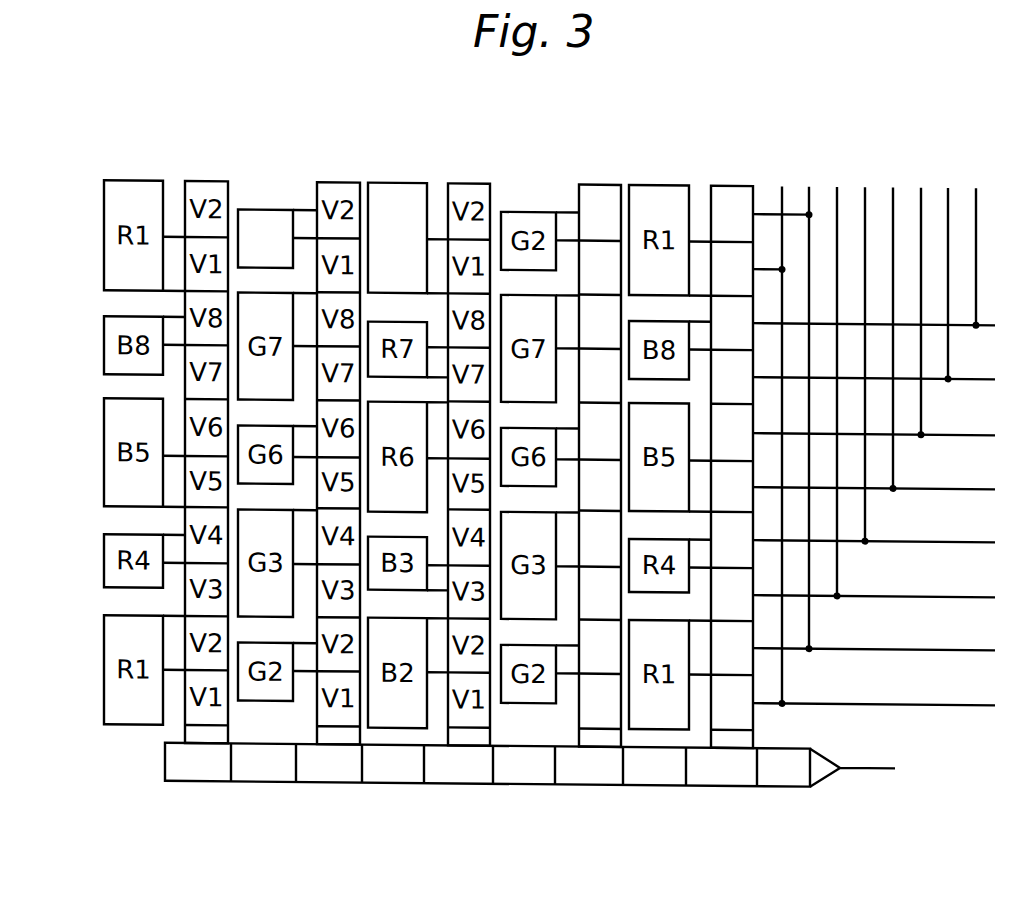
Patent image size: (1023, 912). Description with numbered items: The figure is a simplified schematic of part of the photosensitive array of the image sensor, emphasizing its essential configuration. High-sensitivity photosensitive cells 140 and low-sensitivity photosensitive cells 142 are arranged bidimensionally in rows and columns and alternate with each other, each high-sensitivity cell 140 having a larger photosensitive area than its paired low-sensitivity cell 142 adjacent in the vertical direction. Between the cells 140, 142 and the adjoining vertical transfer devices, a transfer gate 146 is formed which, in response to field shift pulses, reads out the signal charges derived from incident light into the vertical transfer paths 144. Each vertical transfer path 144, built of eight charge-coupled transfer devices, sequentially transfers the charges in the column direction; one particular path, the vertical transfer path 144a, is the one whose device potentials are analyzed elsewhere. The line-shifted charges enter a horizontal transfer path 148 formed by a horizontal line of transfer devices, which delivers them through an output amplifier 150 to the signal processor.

The high-sensitivity photosensitive cell 140 is at (408, 198).
The low-sensitivity photosensitive cell 142 is at (277, 192).
The vertical transfer path 144 is at (618, 426).
The vertical transfer path 144a is at (754, 426).
The transfer gate 146 is at (556, 175).
The horizontal transfer path 148 is at (487, 801).
The output amplifier 150 is at (863, 790).